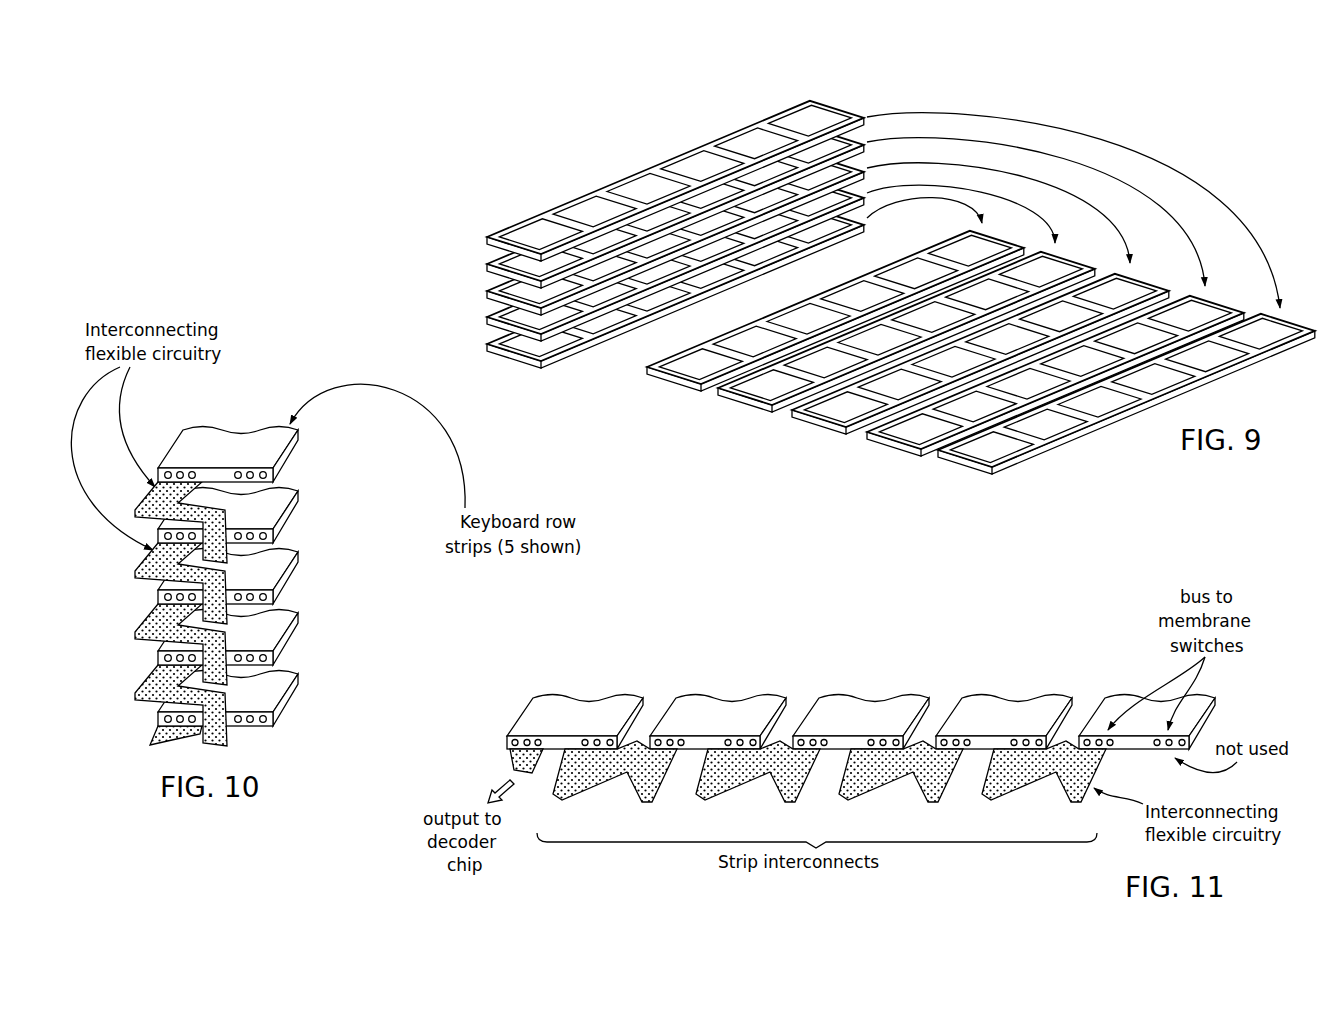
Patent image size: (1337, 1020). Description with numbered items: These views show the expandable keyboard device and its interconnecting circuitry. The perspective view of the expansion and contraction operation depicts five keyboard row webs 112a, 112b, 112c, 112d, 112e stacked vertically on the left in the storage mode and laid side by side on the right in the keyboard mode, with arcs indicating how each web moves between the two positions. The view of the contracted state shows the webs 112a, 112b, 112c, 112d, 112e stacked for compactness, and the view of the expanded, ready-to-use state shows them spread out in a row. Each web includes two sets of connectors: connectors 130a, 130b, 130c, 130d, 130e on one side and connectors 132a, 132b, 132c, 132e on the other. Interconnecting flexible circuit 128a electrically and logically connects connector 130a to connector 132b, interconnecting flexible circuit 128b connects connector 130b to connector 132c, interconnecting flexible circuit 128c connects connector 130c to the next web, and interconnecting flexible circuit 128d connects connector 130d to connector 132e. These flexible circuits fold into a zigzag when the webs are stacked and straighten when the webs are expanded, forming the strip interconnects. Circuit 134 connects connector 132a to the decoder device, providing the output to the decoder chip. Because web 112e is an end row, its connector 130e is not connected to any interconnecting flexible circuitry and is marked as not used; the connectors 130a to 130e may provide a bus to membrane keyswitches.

In FIG. 9, the web 112a is at (487, 344).
In FIG. 10, the web 112a is at (295, 693).
In FIG. 11, the web 112a is at (543, 703).
In FIG. 9, the web 112b is at (745, 403).
In FIG. 10, the web 112b is at (295, 632).
In FIG. 11, the web 112b is at (687, 703).
In FIG. 9, the web 112c is at (819, 425).
In FIG. 10, the web 112c is at (295, 571).
In FIG. 11, the web 112c is at (830, 703).
In FIG. 9, the web 112d is at (893, 447).
In FIG. 10, the web 112d is at (295, 510).
In FIG. 11, the web 112d is at (1028, 703).
In FIG. 9, the web 112e is at (487, 236).
In FIG. 10, the web 112e is at (295, 449).
In FIG. 11, the web 112e is at (1122, 703).
In FIG. 10, the interconnecting flexible circuit 128a is at (150, 684).
In FIG. 11, the interconnecting flexible circuit 128a is at (630, 788).
In FIG. 10, the interconnecting flexible circuit 128b is at (150, 623).
In FIG. 11, the interconnecting flexible circuit 128b is at (773, 788).
In FIG. 10, the interconnecting flexible circuit 128c is at (151, 556).
In FIG. 11, the interconnecting flexible circuit 128c is at (916, 788).
In FIG. 10, the interconnecting flexible circuit 128d is at (151, 494).
In FIG. 11, the interconnecting flexible circuit 128d is at (1055, 788).
In FIG. 10, the connector 130a is at (275, 720).
In FIG. 11, the connector 130a is at (605, 762).
In FIG. 10, the connector 130b is at (275, 659).
In FIG. 10, the connector 130c is at (275, 598).
In FIG. 10, the connector 130d is at (275, 537).
In FIG. 11, the connector 130d is at (1005, 746).
In FIG. 10, the connector 130e is at (275, 476).
In FIG. 11, the connector 130e is at (1190, 718).
In FIG. 10, the connector 132a is at (163, 718).
In FIG. 11, the connector 132a is at (507, 742).
In FIG. 10, the connector 132b is at (163, 657).
In FIG. 10, the connector 132c is at (163, 596).
In FIG. 10, the connector 132e is at (176, 470).
In FIG. 11, the connector 132e is at (1100, 733).
In FIG. 10, the circuit 134 is at (150, 744).
In FIG. 11, the circuit 134 is at (510, 756).